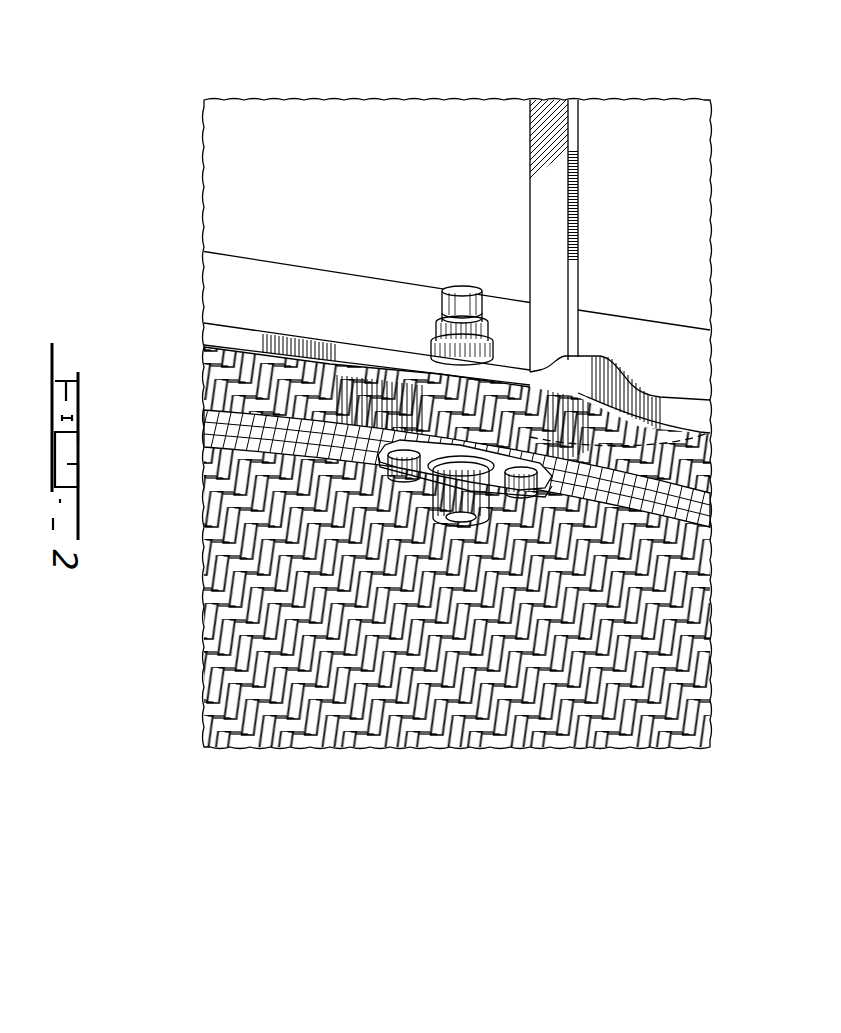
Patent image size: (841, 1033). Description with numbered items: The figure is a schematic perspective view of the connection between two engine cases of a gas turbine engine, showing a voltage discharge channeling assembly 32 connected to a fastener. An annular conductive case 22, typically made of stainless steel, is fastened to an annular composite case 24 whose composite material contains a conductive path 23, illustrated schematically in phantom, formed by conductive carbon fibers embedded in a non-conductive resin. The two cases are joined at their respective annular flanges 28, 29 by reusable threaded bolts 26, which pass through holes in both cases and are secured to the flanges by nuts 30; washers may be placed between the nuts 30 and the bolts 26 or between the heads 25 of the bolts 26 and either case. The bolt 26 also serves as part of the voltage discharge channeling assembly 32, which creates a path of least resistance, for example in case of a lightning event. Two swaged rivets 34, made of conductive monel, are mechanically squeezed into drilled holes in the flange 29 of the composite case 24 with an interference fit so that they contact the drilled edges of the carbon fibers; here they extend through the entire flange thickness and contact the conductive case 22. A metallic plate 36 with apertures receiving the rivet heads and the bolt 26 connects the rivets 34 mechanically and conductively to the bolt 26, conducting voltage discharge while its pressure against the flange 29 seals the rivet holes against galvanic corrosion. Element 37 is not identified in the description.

The conductive case 22 is at (633, 215).
The conductive path 23 is at (640, 442).
The composite case 24 is at (590, 590).
The head 25 is at (461, 524).
The bolt 26 is at (480, 528).
The annular flange 28 is at (676, 407).
The annular flange 29 is at (645, 503).
The nut 30 is at (446, 337).
The voltage discharge channeling assembly 32 is at (658, 763).
The swaged rivet 34 is at (403, 480).
The metallic plate 36 is at (418, 442).
The junction 37 is at (558, 503).